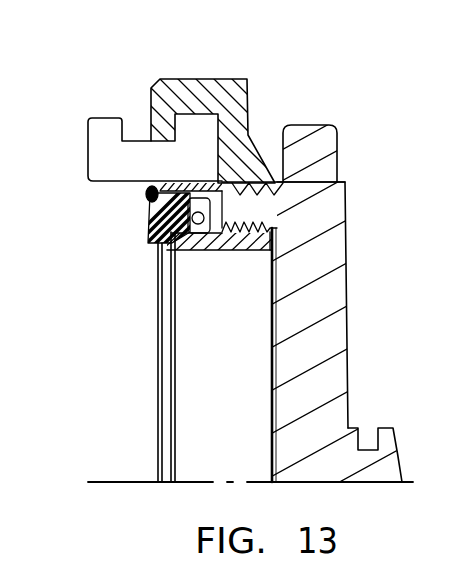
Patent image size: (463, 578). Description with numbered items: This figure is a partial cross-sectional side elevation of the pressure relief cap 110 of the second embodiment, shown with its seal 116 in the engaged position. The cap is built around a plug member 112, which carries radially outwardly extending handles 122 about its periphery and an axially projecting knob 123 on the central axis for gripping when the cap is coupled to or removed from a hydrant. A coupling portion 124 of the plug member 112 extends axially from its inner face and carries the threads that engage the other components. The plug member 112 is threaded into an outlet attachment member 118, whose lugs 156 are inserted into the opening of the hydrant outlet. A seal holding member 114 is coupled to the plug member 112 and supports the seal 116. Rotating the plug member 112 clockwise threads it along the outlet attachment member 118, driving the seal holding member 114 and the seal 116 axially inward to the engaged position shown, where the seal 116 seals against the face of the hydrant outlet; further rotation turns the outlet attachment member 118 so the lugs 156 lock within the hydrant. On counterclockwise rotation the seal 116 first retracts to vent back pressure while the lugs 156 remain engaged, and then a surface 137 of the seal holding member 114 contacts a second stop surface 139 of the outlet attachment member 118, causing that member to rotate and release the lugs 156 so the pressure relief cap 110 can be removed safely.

The pressure relief cap 110 is at (278, 66).
The plug member 112 is at (367, 308).
The seal holding member 114 is at (222, 268).
The seal 116 is at (133, 240).
The outlet attachment member 118 is at (168, 70).
The handle 122 is at (307, 125).
The knob 123 is at (398, 443).
The coupling portion 124 is at (253, 211).
The surface of the seal holding member 137 is at (147, 197).
The second stop surface 139 is at (343, 183).
The lug 156 is at (107, 135).